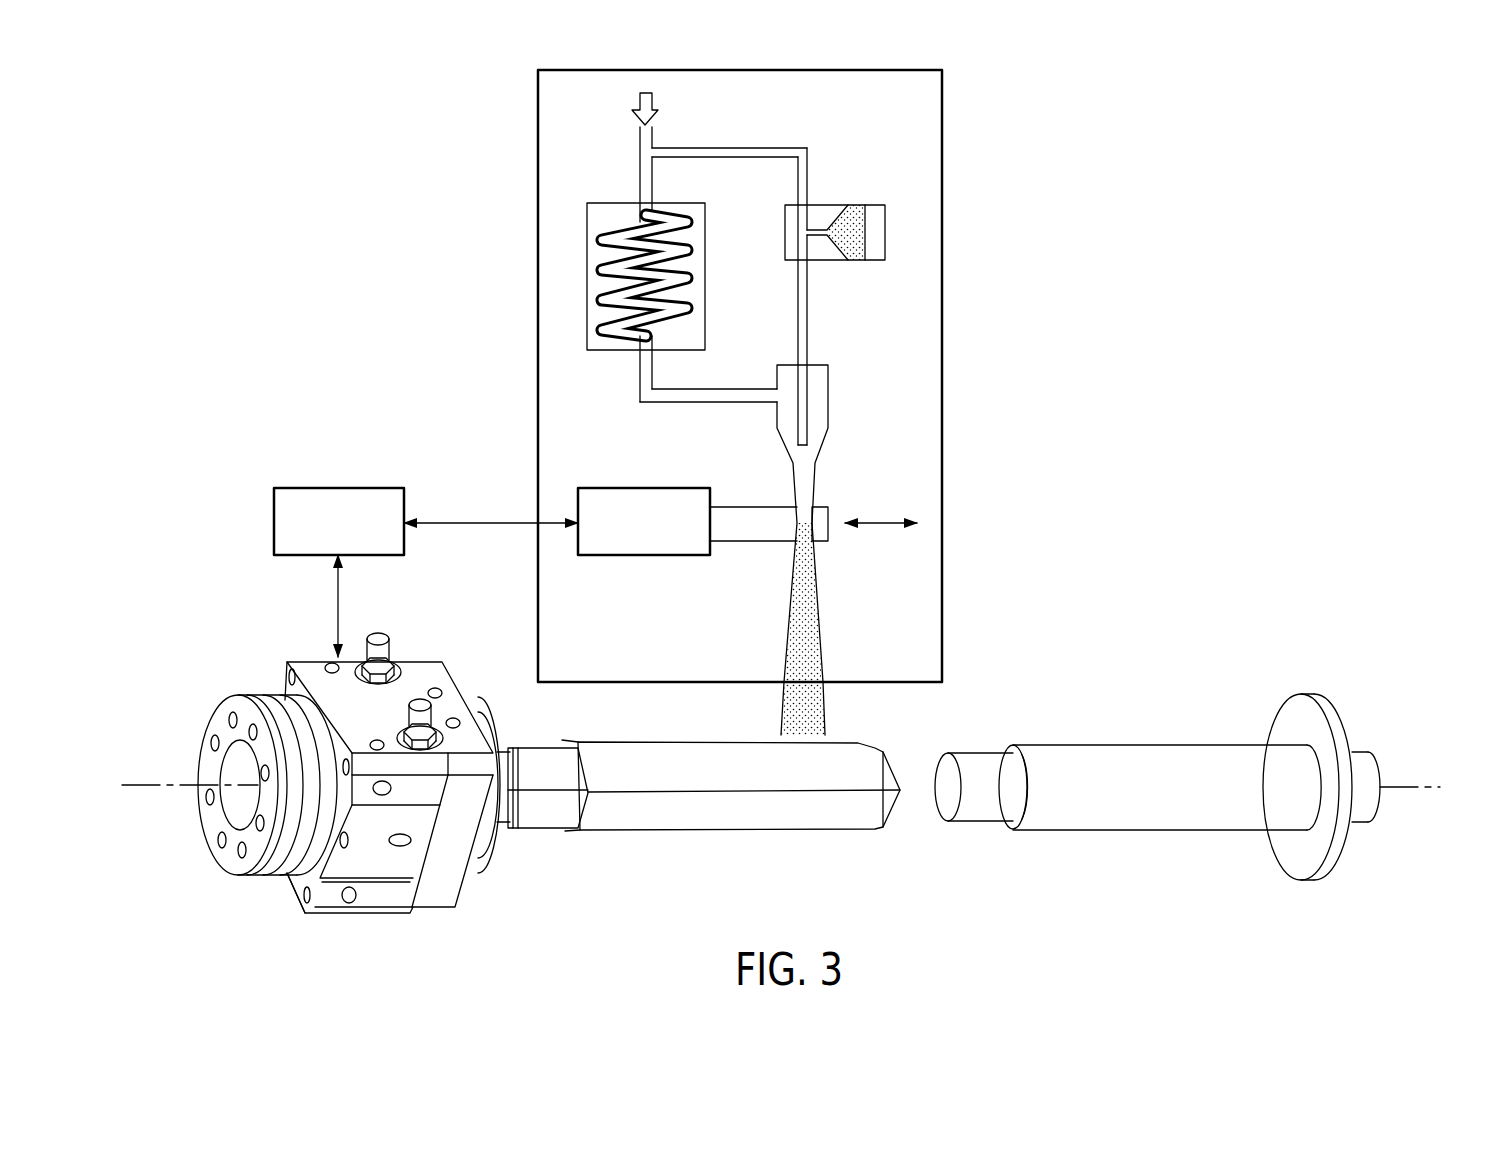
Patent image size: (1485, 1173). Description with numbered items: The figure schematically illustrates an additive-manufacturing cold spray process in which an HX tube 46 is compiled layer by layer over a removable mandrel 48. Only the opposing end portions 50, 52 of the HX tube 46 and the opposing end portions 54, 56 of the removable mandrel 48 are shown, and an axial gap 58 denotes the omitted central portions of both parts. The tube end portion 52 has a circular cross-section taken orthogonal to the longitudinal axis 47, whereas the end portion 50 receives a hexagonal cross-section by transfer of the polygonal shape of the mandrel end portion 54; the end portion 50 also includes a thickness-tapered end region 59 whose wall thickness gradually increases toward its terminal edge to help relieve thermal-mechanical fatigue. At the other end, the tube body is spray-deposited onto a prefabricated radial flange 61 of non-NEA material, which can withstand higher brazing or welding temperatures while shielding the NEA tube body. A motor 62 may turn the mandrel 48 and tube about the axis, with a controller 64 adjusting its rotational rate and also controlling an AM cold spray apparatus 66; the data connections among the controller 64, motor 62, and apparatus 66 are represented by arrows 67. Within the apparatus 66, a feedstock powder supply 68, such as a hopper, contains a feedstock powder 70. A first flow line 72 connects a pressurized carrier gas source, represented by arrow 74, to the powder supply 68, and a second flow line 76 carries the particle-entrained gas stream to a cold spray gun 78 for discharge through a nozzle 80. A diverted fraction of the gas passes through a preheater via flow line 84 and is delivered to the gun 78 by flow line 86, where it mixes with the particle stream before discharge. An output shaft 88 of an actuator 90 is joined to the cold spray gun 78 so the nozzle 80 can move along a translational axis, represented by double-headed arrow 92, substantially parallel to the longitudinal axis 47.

The HX tube 46 is at (1157, 792).
The longitudinal axis 47 is at (125, 785).
The removable mandrel 48 is at (546, 840).
The end portion 50 is at (731, 815).
The end portion 52 is at (1145, 830).
The end portion 54 is at (540, 748).
The end portion 56 is at (990, 821).
The axial gap 58 is at (888, 832).
The thickness-tapered end region 59 is at (623, 830).
The radial flange 61 is at (1297, 866).
The motor 62 is at (233, 697).
The controller 64 is at (342, 488).
The AM cold spray apparatus 66 is at (943, 123).
The arrows 67 is at (480, 523).
The feedstock powder supply 68 is at (874, 268).
The feedstock powder 70 is at (858, 205).
The first flow line 72 is at (740, 148).
The arrow 74 is at (656, 101).
The second flow line 76 is at (807, 305).
The cold spray gun 78 is at (836, 413).
The nozzle 80 is at (828, 702).
The flow line 84 is at (640, 170).
The flow line 86 is at (700, 402).
The output shaft 88 is at (750, 541).
The actuator 90 is at (640, 555).
The double-headed arrow 92 is at (878, 523).